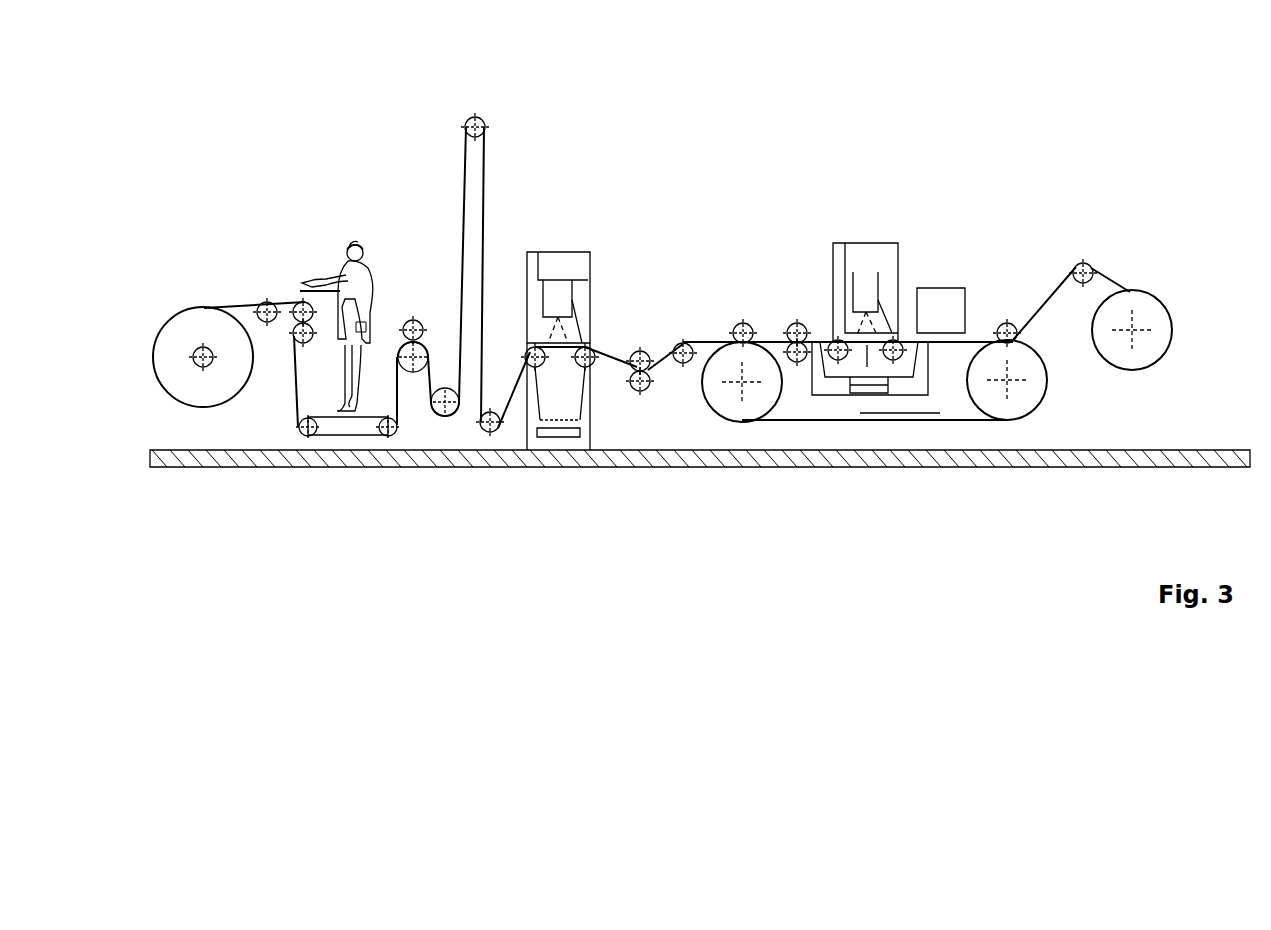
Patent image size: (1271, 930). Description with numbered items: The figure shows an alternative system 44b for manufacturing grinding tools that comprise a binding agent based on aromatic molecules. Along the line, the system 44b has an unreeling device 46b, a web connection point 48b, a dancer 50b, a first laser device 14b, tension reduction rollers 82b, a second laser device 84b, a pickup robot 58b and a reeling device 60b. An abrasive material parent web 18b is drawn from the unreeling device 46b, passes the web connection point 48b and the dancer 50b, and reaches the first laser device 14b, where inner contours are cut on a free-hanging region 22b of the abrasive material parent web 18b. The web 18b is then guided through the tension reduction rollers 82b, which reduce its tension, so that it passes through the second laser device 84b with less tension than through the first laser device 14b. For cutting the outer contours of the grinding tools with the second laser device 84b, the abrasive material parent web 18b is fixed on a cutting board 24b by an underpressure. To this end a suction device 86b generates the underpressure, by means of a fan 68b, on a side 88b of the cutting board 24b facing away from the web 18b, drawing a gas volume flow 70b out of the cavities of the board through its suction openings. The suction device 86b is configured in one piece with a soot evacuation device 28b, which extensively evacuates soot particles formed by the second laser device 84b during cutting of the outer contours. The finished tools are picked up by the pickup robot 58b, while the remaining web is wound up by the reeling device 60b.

The system 44b is at (1064, 149).
The unreeling device 46b is at (172, 306).
The abrasive material parent web 18b is at (243, 301).
The web connection point 48b is at (302, 271).
The dancer 50b is at (477, 108).
The first laser device 14b is at (572, 234).
The free-hanging region 22b is at (568, 367).
The tension reduction rollers 82b is at (703, 308).
The cutting board 24b is at (797, 421).
The second laser device 84b is at (900, 216).
The pickup robot 58b is at (947, 288).
The gas volume flow 70b is at (864, 369).
The soot evacuation device 28b is at (931, 420).
The suction device 86b is at (876, 377).
The side 88b is at (849, 368).
The fan 68b is at (873, 384).
The reeling device 60b is at (1150, 278).